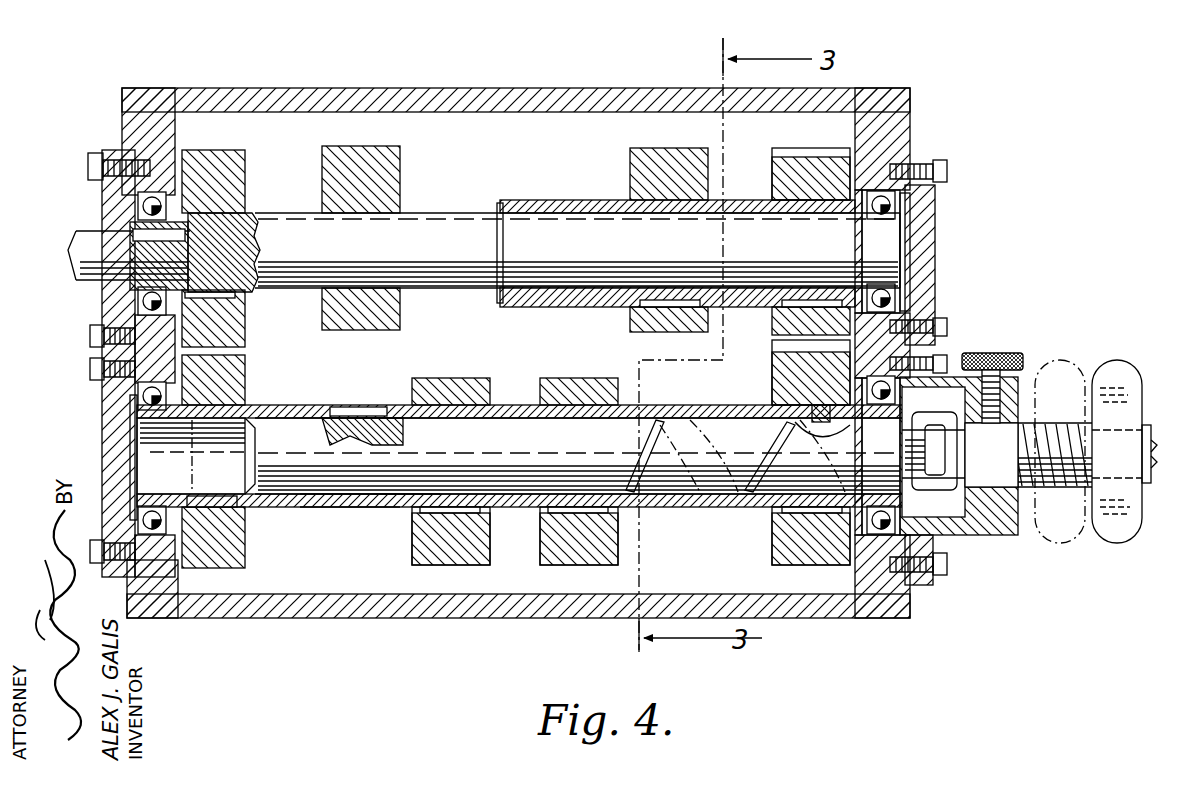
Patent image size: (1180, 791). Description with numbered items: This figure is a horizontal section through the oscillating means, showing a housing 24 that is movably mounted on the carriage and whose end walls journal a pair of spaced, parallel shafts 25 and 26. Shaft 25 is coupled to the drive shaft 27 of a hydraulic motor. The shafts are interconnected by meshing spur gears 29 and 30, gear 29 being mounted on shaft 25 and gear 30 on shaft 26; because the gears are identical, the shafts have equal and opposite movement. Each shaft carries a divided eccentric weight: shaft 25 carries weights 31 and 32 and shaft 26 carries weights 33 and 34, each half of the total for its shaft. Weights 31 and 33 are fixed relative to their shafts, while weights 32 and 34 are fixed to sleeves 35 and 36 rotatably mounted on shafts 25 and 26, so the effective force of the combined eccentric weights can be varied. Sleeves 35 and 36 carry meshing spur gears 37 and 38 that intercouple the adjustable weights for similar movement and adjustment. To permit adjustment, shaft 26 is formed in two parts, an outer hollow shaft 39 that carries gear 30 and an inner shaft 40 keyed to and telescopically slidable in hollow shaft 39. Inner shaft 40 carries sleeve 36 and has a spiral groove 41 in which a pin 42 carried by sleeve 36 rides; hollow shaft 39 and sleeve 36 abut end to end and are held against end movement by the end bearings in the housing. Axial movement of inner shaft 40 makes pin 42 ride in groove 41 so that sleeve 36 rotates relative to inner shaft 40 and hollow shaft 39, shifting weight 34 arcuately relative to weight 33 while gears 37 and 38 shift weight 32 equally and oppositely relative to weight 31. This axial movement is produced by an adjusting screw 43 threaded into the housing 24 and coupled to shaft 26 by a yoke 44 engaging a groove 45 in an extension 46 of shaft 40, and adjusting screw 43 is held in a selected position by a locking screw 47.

The housing 24 is at (653, 88).
The shaft 25 is at (412, 250).
The shaft 26 is at (299, 438).
The drive shaft 27 is at (82, 240).
The spur gear 29 is at (245, 193).
The spur gear 30 is at (236, 388).
The weight 31 is at (400, 179).
The weight 32 is at (632, 166).
The weight 33 is at (466, 378).
The weight 34 is at (580, 378).
The sleeve 35 is at (735, 204).
The sleeve 36 is at (704, 405).
The spur gear 37 is at (797, 160).
The spur gear 38 is at (772, 536).
The hollow shaft 39 is at (330, 507).
The inner shaft 40 is at (412, 494).
The spiral groove 41 is at (632, 437).
The pin 42 is at (800, 432).
The adjusting screw 43 is at (1108, 382).
The yoke 44 is at (936, 492).
The groove 45 is at (931, 462).
The extension 46 is at (920, 448).
The locking screw 47 is at (1000, 354).